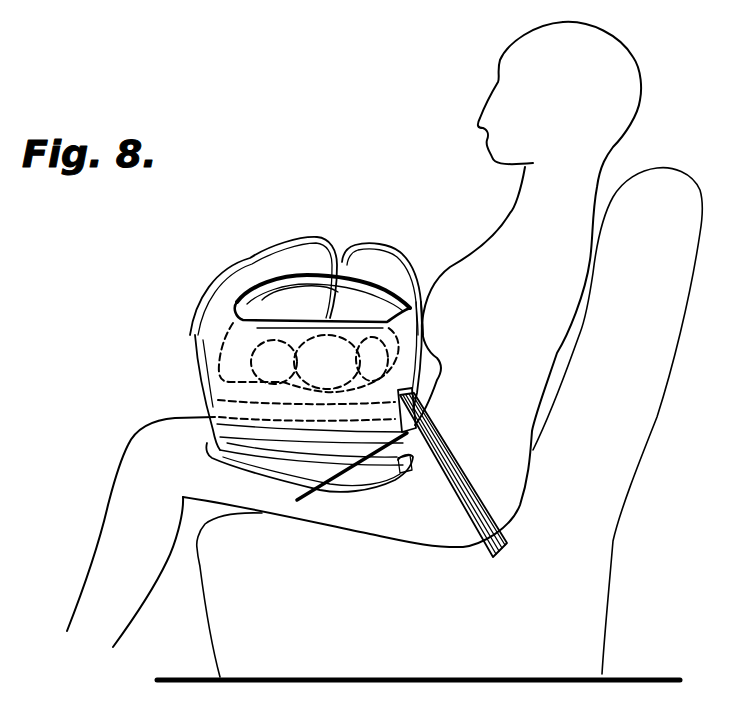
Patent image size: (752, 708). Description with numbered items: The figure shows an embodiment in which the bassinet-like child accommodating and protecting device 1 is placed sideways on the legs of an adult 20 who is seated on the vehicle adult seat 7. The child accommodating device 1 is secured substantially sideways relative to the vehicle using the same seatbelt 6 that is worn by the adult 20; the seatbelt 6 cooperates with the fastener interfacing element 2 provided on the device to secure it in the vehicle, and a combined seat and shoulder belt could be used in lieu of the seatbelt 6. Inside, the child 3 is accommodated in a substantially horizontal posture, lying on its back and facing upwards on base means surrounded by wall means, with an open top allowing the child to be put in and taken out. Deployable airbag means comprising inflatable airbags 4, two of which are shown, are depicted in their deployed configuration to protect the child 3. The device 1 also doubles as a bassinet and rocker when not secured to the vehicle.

The child accommodating and protecting device 1 is at (200, 330).
The fastener interfacing element 2 is at (297, 500).
The child 3 is at (300, 340).
The inflatable airbag 4 is at (367, 243).
The seatbelt 6 is at (463, 481).
The vehicle adult seat 7 is at (617, 541).
The adult 20 is at (641, 77).